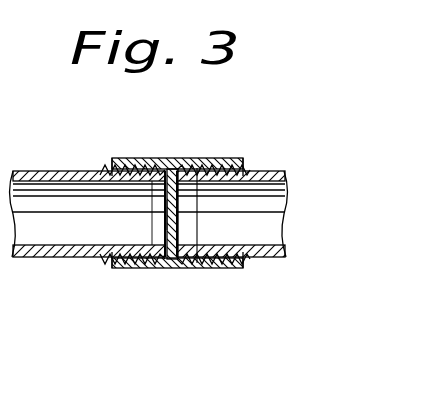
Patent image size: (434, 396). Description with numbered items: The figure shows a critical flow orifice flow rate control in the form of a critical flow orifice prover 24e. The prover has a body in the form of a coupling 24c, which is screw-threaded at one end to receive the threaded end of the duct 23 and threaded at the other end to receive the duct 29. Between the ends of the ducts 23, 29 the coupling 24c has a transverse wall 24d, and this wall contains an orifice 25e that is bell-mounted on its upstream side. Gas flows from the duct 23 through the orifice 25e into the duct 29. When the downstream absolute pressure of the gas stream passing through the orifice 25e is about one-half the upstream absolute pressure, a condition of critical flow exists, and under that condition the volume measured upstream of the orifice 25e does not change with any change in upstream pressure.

The duct 23 is at (58, 171).
The duct 29 is at (275, 170).
The critical flow orifice prover 24e is at (160, 213).
The coupling 24c is at (170, 158).
The transverse wall 24d is at (196, 166).
The orifice 25e is at (167, 215).